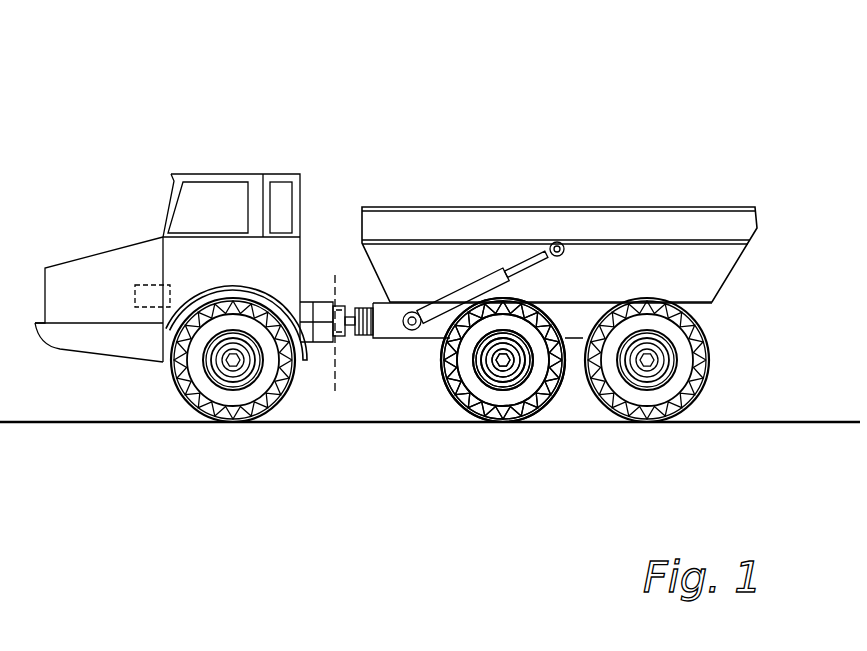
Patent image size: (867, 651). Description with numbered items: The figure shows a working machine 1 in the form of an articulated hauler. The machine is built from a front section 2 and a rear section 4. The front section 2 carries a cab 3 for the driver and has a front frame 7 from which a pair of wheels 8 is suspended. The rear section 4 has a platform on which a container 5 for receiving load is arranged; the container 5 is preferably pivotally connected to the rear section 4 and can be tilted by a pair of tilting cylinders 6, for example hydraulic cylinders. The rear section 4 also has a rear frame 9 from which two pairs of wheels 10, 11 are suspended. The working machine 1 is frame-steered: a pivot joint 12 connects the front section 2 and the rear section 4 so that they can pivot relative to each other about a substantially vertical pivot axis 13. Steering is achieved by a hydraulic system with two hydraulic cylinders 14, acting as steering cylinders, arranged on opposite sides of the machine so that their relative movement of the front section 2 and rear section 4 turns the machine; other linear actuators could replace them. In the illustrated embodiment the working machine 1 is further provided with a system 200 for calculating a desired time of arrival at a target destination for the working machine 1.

The working machine 1 is at (646, 68).
The front section 2 is at (108, 168).
The cab 3 is at (232, 178).
The rear section 4 is at (661, 178).
The container 5 is at (483, 227).
The tilting cylinders 6 is at (453, 303).
The front frame 7 is at (97, 340).
The wheels 8 is at (225, 395).
The rear frame 9 is at (388, 325).
The wheels 10 is at (505, 423).
The wheels 11 is at (675, 417).
The pivot joint 12 is at (325, 340).
The pivot axis 13 is at (337, 383).
The hydraulic cylinders 14 is at (352, 325).
The system 200 is at (150, 288).